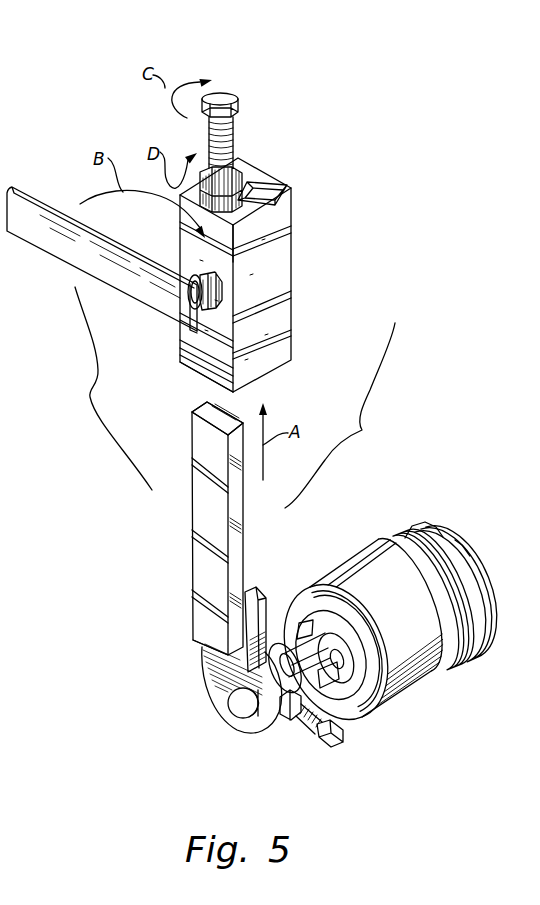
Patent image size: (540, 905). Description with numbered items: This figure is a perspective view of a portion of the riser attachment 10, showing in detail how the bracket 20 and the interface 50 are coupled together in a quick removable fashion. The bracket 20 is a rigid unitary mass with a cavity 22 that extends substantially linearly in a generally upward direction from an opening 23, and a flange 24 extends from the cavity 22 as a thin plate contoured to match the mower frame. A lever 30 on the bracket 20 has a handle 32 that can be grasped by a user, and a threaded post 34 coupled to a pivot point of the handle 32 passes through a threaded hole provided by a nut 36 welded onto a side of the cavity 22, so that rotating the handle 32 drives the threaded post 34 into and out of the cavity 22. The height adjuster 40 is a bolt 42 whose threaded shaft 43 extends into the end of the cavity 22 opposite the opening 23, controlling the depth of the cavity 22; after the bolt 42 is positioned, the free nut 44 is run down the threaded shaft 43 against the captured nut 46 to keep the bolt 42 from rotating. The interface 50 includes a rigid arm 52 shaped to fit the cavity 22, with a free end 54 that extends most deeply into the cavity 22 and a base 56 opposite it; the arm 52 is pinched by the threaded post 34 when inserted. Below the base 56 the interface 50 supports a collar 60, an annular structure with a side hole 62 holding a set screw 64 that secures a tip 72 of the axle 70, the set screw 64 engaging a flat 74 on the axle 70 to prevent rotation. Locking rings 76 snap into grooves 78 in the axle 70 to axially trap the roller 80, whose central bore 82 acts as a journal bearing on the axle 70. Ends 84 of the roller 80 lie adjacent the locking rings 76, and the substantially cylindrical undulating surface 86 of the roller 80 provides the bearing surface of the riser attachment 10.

The riser attachment 10 is at (413, 223).
The bracket 20 is at (302, 160).
The cavity 22 is at (177, 352).
The opening 23 is at (185, 378).
The flange 24 is at (270, 178).
The lever 30 is at (102, 256).
The handle 32 is at (35, 220).
The threaded post 34 is at (190, 280).
The nut 36 is at (222, 293).
The height adjuster 40 is at (268, 106).
The bolt 42 is at (226, 93).
The threaded shaft 43 is at (232, 143).
The free nut 44 is at (237, 178).
The captured nut 46 is at (236, 226).
The interface 50 is at (326, 599).
The arm 52 is at (200, 502).
The free end 54 is at (200, 432).
The base 56 is at (197, 630).
The collar 60 is at (263, 727).
The side hole 62 is at (303, 730).
The set screw 64 is at (343, 743).
The axle 70 is at (285, 640).
The tip 72 is at (244, 708).
The flat 74 is at (350, 723).
The locking ring 76 is at (342, 680).
The groove 78 is at (323, 633).
The roller 80 is at (393, 606).
The central bore 82 is at (355, 657).
The end 84 is at (354, 637).
The surface 86 is at (477, 647).